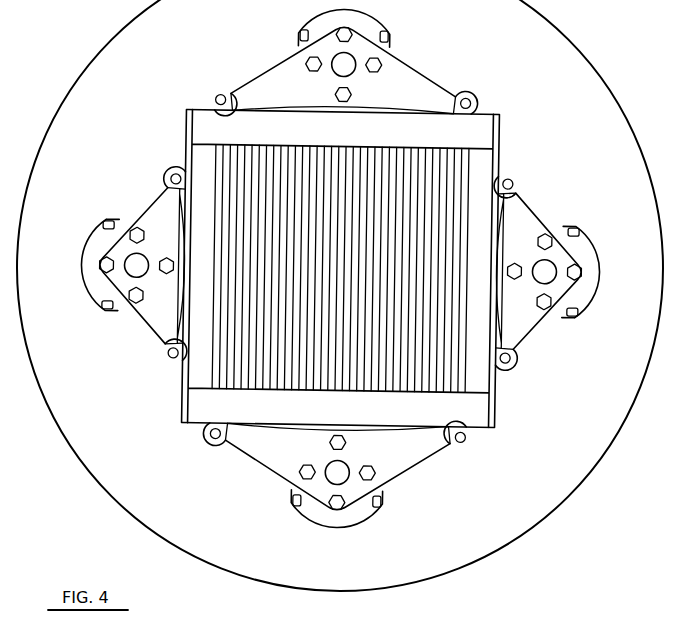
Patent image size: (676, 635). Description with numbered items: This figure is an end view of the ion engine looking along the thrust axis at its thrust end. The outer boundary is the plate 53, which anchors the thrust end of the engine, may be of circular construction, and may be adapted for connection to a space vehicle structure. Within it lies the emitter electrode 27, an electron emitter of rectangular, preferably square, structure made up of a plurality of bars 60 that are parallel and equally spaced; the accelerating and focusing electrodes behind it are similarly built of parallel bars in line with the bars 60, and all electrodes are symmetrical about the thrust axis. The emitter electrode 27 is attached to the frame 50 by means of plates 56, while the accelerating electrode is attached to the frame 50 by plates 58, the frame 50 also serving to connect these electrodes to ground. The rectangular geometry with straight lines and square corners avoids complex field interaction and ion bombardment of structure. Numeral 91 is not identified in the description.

The emitter electrode 27 is at (482, 123).
The frame 50 is at (469, 94).
The plate 53 is at (593, 69).
The plates 56 is at (146, 193).
The plates 58 is at (405, 62).
The bars 60 is at (455, 363).
The reference numeral 91 is at (617, 626).